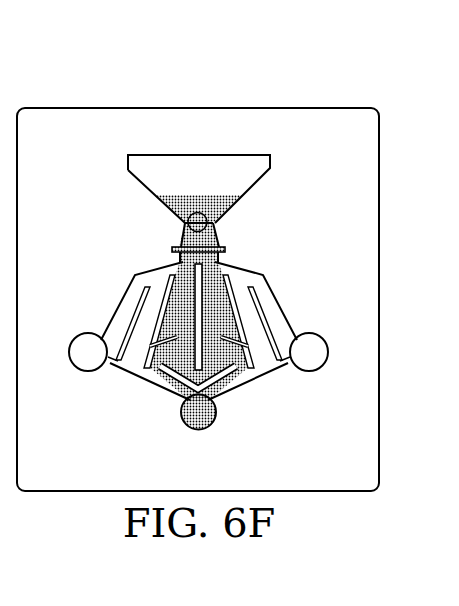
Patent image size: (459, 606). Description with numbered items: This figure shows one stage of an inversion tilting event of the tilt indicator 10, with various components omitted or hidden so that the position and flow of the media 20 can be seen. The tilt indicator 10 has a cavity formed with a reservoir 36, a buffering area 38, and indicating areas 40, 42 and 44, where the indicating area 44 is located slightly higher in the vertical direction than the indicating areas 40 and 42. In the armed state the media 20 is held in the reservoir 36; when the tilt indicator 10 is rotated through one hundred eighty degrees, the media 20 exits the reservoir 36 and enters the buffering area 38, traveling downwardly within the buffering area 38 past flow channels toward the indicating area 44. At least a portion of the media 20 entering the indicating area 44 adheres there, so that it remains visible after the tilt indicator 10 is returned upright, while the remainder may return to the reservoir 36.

The tilt indicator 10 is at (273, 70).
The media 20 is at (212, 272).
The reservoir 36 is at (145, 181).
The buffering area 38 is at (130, 366).
The indicating area 40 is at (78, 371).
The indicating area 42 is at (310, 370).
The indicating area 44 is at (206, 432).